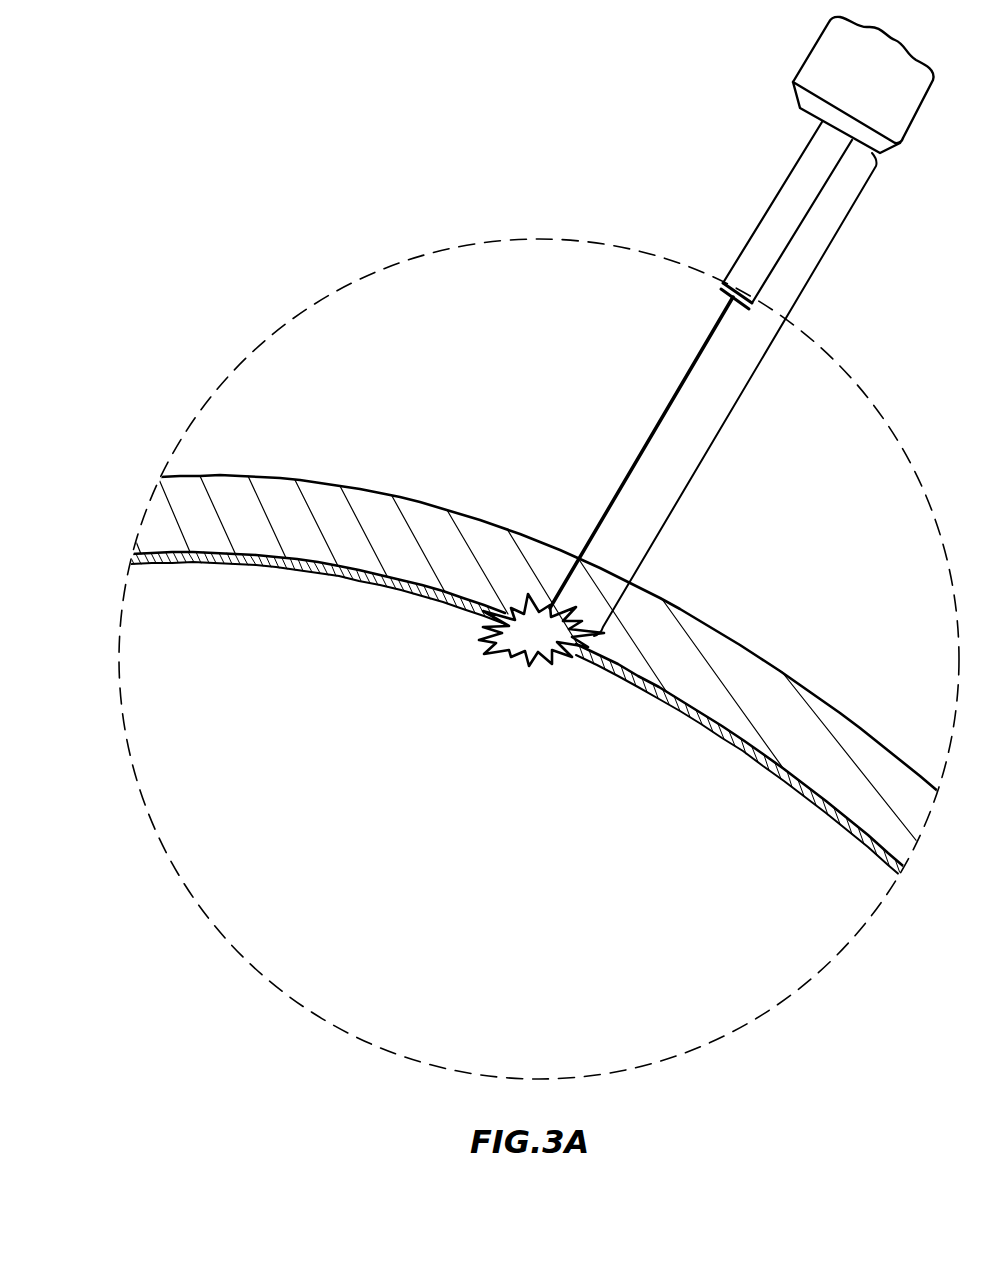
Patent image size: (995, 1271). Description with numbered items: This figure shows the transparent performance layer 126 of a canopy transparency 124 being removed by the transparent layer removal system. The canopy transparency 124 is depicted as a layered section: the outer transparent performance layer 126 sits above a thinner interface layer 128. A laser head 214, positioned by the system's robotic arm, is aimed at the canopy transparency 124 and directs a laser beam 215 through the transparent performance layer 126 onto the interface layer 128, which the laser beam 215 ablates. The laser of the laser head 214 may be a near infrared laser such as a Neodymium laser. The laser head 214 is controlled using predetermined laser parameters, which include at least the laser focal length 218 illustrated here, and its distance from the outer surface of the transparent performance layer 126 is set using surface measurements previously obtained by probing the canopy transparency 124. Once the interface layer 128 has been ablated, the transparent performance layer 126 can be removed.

The canopy transparency 124 is at (178, 828).
The transparent performance layer 126 is at (275, 493).
The interface layer 128 is at (283, 566).
The laser head 214 is at (813, 67).
The laser beam 215 is at (665, 413).
The laser focal length 218 is at (740, 397).